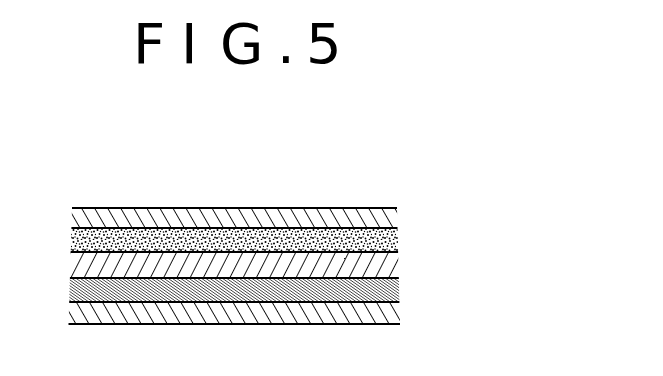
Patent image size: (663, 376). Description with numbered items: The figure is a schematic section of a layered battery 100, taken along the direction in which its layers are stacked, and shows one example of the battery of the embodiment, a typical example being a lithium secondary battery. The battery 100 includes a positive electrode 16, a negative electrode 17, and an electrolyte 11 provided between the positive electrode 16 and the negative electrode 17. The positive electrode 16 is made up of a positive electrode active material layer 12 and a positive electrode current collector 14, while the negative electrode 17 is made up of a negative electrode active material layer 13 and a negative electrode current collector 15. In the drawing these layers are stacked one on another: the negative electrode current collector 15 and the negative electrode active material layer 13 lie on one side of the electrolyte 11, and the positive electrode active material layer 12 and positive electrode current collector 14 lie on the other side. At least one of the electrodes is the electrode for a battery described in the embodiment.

The battery 100 is at (312, 170).
The electrolyte 11 is at (370, 267).
The positive electrode active material layer 12 is at (395, 293).
The negative electrode active material layer 13 is at (393, 235).
The positive electrode current collector 14 is at (387, 310).
The negative electrode current collector 15 is at (383, 214).
The positive electrode 16 is at (478, 283).
The negative electrode 17 is at (478, 205).